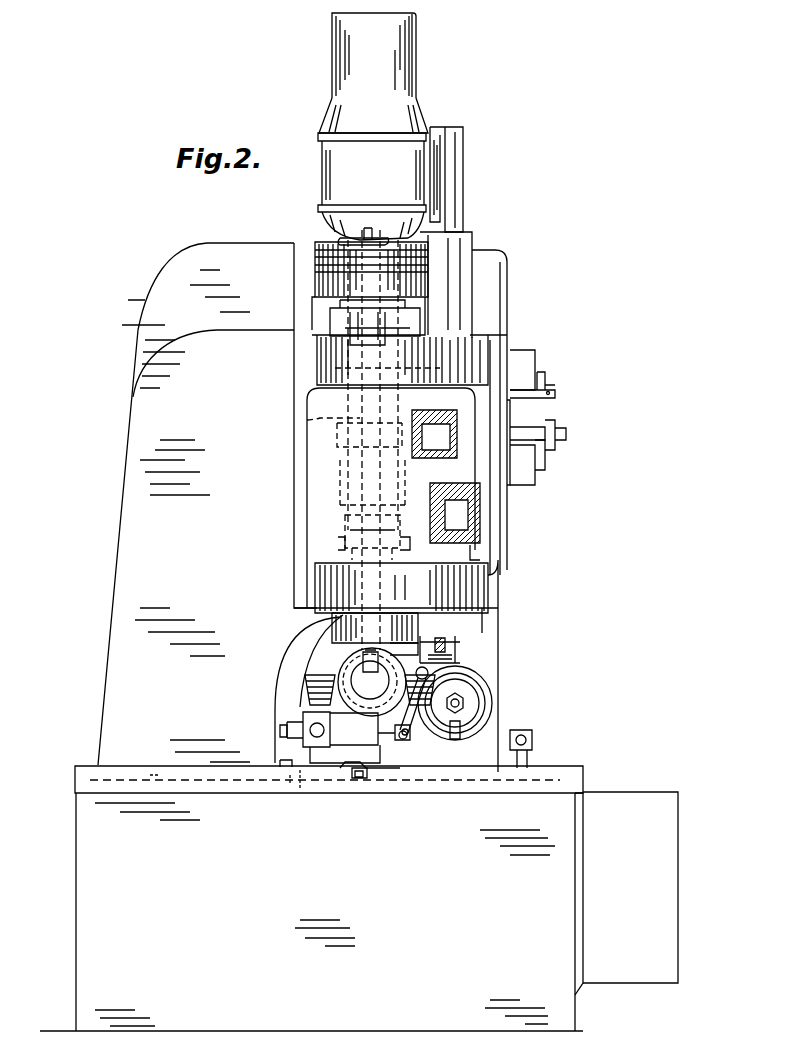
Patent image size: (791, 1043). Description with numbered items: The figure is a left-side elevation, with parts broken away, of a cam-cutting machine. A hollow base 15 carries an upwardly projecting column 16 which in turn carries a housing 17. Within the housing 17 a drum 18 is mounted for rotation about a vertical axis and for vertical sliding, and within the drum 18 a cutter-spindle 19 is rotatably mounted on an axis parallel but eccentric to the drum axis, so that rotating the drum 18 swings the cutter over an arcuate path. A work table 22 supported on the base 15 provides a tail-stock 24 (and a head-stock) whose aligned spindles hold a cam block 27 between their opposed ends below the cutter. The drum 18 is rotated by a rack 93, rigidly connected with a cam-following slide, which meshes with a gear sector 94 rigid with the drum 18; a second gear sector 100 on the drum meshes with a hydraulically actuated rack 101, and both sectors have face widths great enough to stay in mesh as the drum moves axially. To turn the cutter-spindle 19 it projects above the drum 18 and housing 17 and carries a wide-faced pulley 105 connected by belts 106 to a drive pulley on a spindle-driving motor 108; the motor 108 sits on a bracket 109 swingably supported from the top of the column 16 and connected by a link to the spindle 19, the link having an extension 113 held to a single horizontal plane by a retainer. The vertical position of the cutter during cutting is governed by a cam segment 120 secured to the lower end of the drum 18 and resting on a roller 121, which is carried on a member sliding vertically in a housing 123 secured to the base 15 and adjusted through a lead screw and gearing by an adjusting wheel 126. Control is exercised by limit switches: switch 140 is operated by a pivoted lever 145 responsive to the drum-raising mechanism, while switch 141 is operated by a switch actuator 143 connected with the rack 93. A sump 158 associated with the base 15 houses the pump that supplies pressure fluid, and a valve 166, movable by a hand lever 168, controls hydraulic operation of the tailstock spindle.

The hollow base 15 is at (115, 892).
The column 16 is at (118, 655).
The housing 17 is at (318, 402).
The drum 18 is at (360, 510).
The cutter-spindle 19 is at (350, 528).
The work table 22 is at (398, 770).
The tail-stock 24 is at (345, 672).
The cam block 27 is at (330, 708).
The rack 93 is at (438, 436).
The gear sector 94 is at (360, 452).
The gear sector 100 is at (478, 563).
The rack 101 is at (458, 520).
The pulley 105 is at (326, 244).
The belts 106 is at (316, 262).
The spindle-driving motor 108 is at (332, 178).
The bracket 109 is at (455, 188).
The link extension 113 is at (330, 319).
The cam segment 120 is at (455, 646).
The roller 121 is at (460, 658).
The housing 123 is at (500, 717).
The adjusting wheel 126 is at (487, 694).
The switch 140 is at (535, 358).
The switch 141 is at (525, 470).
The switch actuator 143 is at (555, 424).
The pivoted lever 145 is at (555, 395).
The sump 158 is at (630, 887).
The valve 166 is at (352, 754).
The hand lever 168 is at (412, 740).